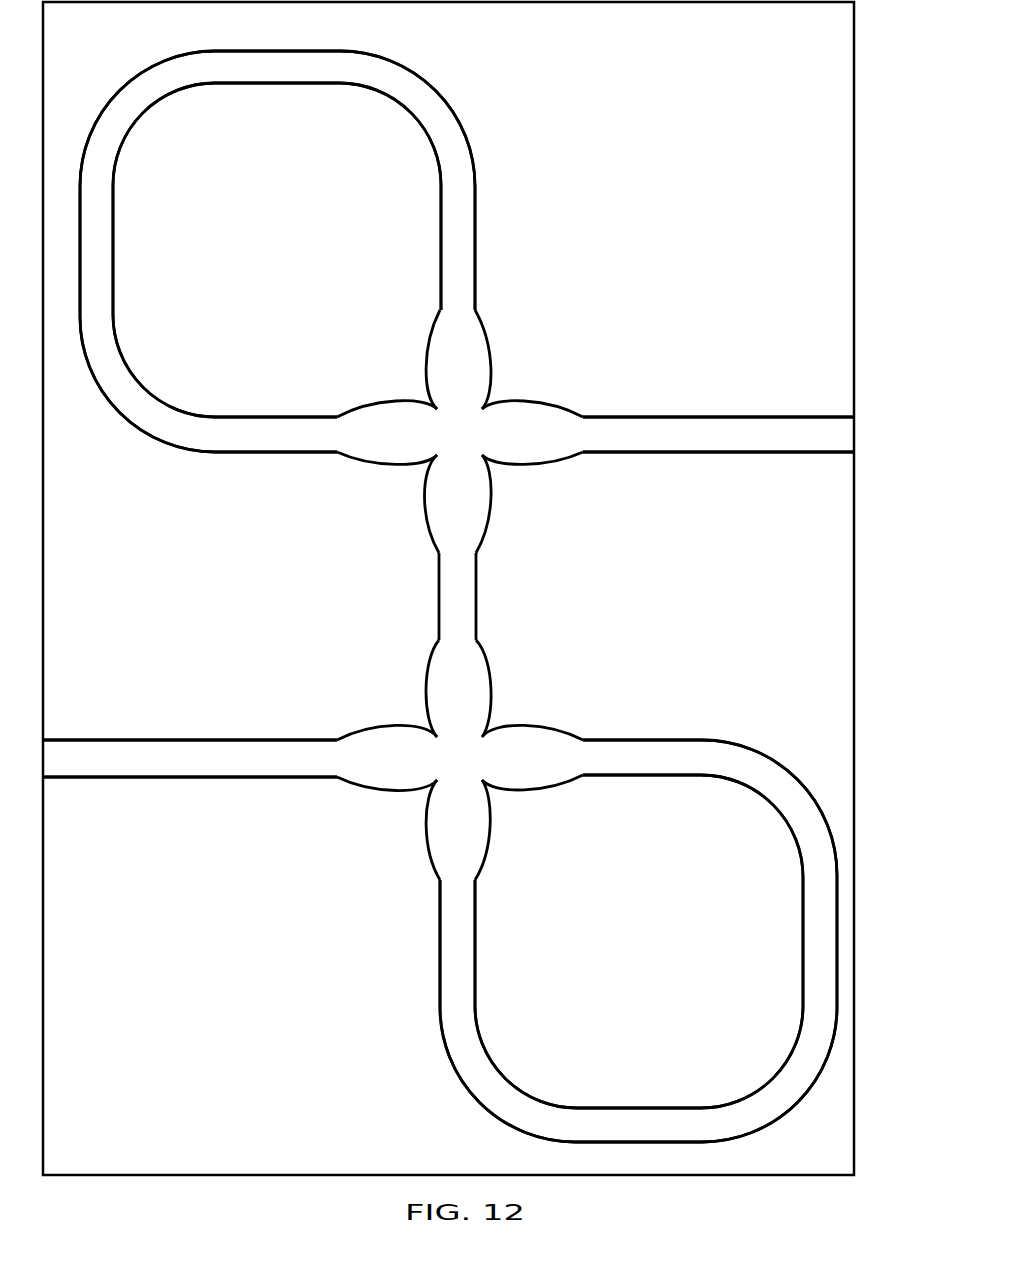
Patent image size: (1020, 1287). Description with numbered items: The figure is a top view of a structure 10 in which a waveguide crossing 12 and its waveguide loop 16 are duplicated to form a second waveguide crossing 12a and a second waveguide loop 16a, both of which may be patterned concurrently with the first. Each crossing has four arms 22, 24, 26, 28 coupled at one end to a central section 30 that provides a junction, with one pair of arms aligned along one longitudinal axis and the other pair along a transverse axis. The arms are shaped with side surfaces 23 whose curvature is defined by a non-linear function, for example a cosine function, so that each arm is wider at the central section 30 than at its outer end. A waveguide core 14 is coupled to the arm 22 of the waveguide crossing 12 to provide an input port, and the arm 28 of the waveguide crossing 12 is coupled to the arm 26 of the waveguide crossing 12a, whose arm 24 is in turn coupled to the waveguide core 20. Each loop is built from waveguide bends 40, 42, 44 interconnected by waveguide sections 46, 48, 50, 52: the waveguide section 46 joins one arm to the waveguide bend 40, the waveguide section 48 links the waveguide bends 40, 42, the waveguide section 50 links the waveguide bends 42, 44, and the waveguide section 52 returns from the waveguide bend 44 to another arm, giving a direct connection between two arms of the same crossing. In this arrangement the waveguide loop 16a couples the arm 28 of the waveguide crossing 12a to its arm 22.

The structure 10 is at (620, 172).
The waveguide crossing 12 is at (489, 686).
The waveguide crossing 12a is at (428, 503).
The waveguide core 14 is at (158, 747).
The waveguide loop 16 is at (791, 1044).
The waveguide loop 16a is at (281, 237).
The waveguide core 20 is at (705, 420).
The arm 22 is at (358, 423).
The side surfaces 23 is at (375, 463).
The arm 24 is at (553, 418).
The arm 26 is at (477, 512).
The arm 28 is at (478, 355).
The central section 30 is at (468, 444).
The waveguide bend 40 is at (430, 126).
The waveguide bend 42 is at (127, 119).
The waveguide bend 44 is at (142, 398).
The waveguide section 46 is at (455, 233).
The waveguide section 48 is at (312, 68).
The waveguide section 50 is at (292, 428).
The waveguide section 52 is at (107, 260).